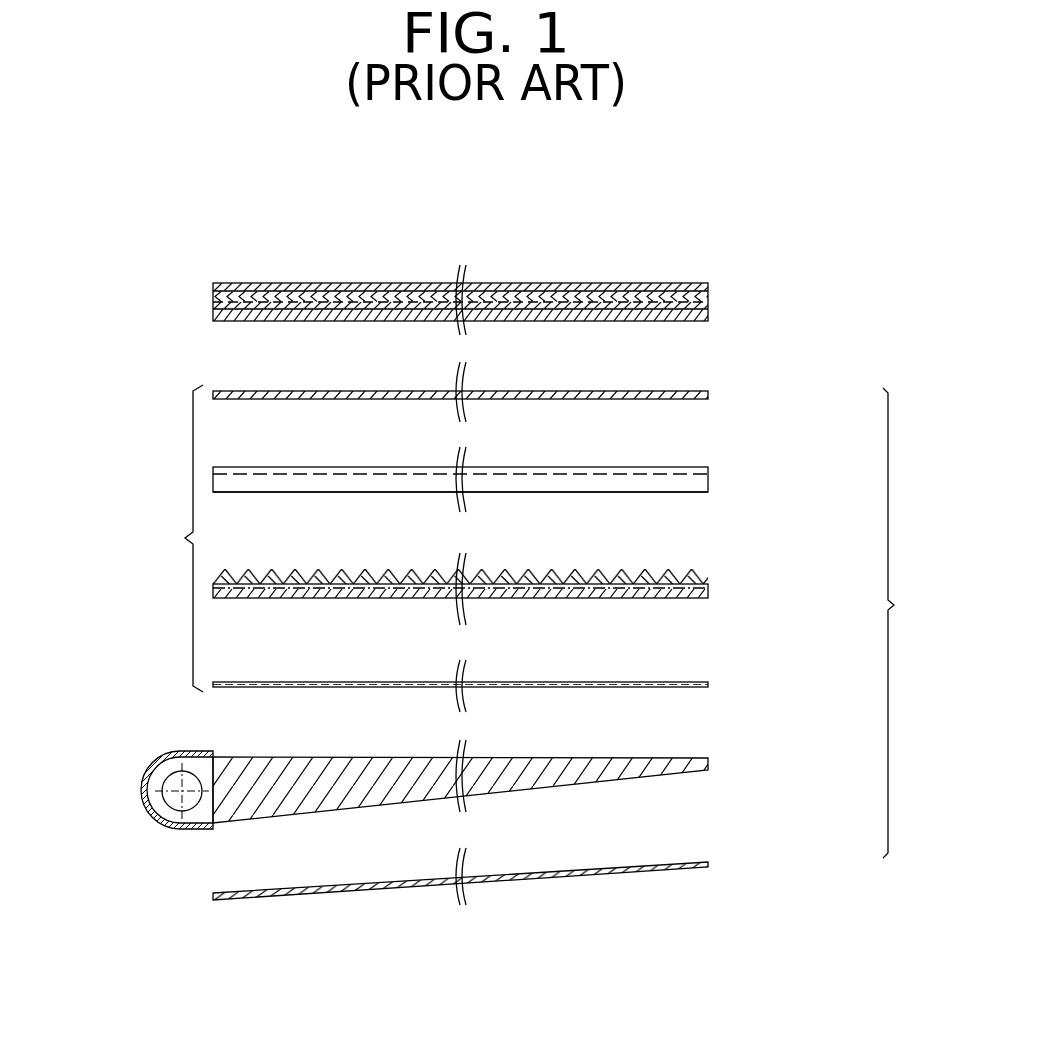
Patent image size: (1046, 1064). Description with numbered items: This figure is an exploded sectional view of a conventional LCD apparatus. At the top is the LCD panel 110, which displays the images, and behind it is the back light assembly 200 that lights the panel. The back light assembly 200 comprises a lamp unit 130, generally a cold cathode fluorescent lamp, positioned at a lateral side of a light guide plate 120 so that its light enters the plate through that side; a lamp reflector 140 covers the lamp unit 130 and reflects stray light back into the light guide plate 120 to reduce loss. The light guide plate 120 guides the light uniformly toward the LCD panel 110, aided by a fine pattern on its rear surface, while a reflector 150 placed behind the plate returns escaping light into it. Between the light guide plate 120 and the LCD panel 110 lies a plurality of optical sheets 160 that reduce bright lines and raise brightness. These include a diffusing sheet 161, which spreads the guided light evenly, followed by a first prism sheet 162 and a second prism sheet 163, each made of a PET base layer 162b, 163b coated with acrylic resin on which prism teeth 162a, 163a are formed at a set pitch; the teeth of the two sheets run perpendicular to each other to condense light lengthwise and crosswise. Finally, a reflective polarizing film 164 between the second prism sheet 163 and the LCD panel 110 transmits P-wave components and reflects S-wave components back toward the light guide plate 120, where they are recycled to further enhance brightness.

The LCD panel 110 is at (708, 299).
The light guide plate 120 is at (708, 760).
The lamp unit 130 is at (158, 827).
The lamp reflector 140 is at (141, 782).
The reflector 150 is at (708, 862).
The optical sheets 160 is at (181, 553).
The diffusing sheet 161 is at (708, 683).
The first prism sheet 162 is at (539, 580).
The prism teeth 162a is at (708, 572).
The base layer 162b is at (708, 596).
The second prism sheet 163 is at (537, 475).
The prism teeth 163a is at (708, 468).
The base layer 163b is at (708, 491).
The reflective polarizing film 164 is at (708, 393).
The back light assembly 200 is at (939, 619).